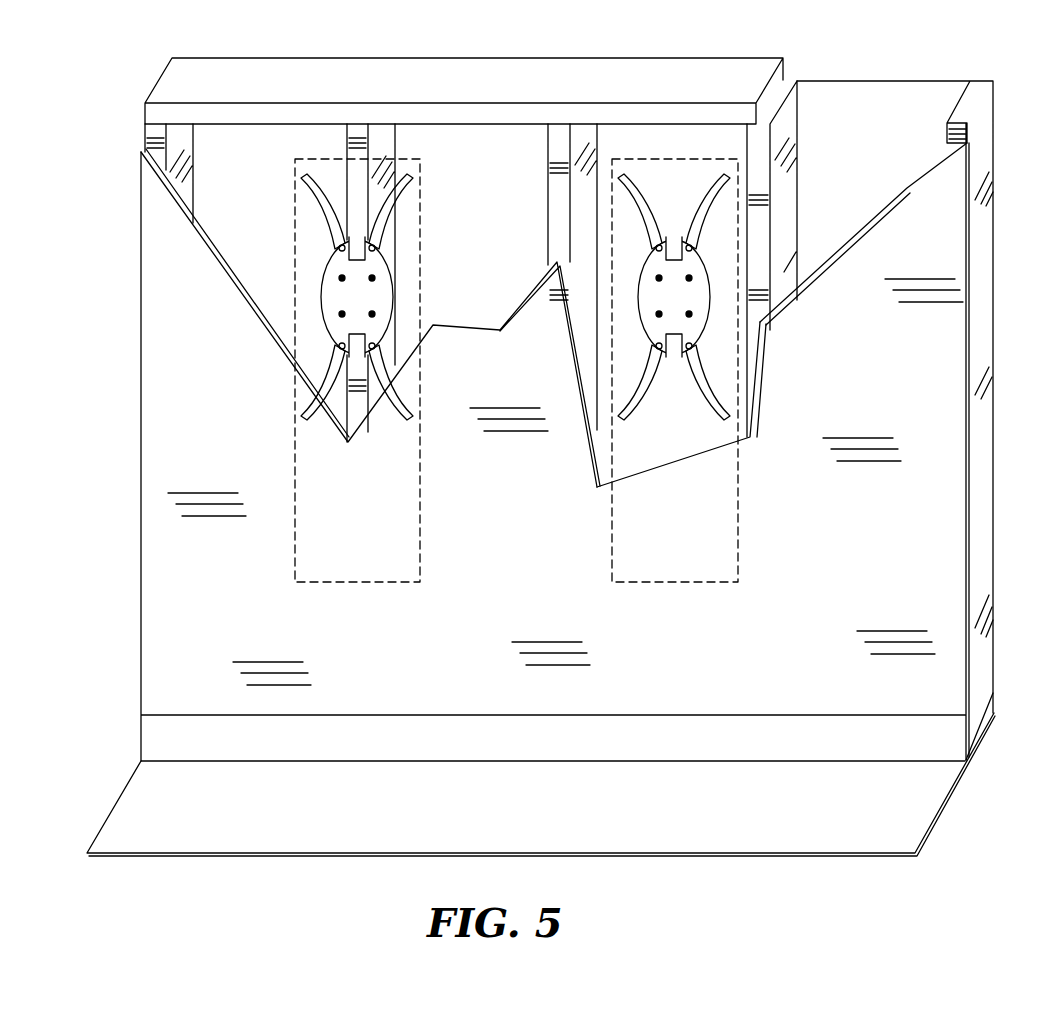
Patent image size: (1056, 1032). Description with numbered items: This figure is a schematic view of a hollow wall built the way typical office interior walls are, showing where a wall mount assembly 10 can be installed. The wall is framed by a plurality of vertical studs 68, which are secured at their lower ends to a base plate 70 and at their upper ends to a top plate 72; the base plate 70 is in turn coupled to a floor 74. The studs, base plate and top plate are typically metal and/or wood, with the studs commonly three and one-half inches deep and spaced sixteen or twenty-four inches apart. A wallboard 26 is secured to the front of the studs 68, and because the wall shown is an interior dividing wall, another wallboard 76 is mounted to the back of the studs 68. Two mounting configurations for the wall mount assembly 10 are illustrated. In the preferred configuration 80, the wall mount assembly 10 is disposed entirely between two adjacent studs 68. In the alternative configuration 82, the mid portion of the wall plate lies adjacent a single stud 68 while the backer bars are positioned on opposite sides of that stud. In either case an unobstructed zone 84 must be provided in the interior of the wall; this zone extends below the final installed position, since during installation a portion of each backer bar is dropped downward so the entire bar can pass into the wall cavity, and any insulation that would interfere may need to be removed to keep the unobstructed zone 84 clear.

The wall mount assembly 10 is at (396, 360).
The wallboard 26 is at (863, 272).
The studs 68 is at (787, 177).
The base plate 70 is at (977, 730).
The top plate 72 is at (793, 87).
The floor 74 is at (927, 817).
The wallboard 76 is at (941, 110).
The configuration 80 is at (769, 463).
The configuration 82 is at (440, 472).
The unobstructed zone 84 is at (372, 578).